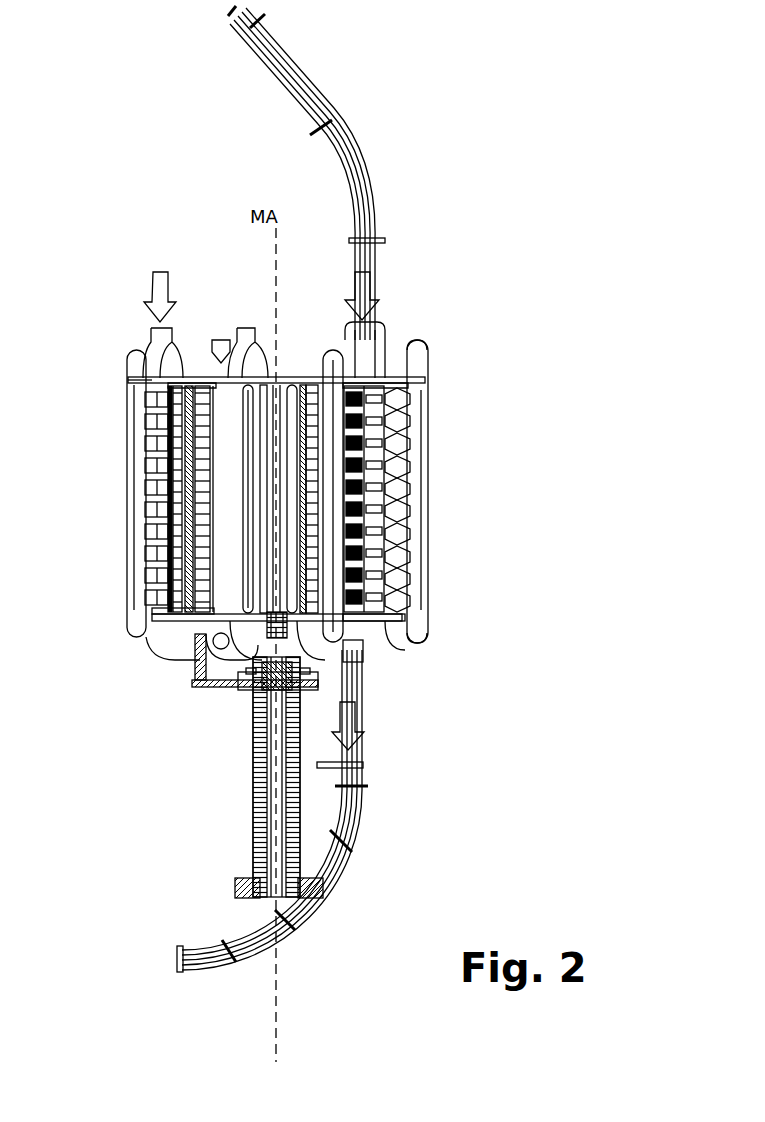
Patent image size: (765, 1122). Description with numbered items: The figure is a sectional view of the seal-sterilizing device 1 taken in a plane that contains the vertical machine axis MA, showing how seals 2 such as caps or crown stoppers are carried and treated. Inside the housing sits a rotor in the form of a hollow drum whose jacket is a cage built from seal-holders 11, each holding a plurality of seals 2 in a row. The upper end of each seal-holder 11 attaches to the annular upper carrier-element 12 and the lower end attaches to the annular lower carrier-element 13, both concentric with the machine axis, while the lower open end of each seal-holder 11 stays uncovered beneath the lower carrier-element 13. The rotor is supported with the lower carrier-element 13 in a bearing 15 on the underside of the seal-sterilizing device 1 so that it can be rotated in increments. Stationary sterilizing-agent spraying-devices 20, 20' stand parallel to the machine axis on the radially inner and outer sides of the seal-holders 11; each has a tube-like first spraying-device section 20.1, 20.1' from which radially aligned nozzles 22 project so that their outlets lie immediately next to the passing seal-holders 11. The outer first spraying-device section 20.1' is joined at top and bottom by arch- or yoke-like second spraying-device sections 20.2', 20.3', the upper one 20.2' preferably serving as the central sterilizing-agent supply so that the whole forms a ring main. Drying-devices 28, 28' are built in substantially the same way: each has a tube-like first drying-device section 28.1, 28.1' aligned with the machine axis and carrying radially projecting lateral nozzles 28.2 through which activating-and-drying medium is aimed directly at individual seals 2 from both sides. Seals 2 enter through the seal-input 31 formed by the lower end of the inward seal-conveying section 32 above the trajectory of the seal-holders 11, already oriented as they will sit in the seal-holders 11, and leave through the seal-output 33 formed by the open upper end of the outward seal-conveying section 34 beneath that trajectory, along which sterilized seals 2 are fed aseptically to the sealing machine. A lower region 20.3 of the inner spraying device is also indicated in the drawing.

The seal-sterilizing device 1 is at (468, 235).
The seals 2 is at (313, 537).
The seal-holders 11 is at (285, 652).
The upper carrier-element 12 is at (187, 390).
The lower carrier-element 13 is at (185, 620).
The bearing 15 is at (292, 691).
The sterilizing-agent spraying-device 20 is at (396, 458).
The sterilizing-agent spraying-device 20' is at (477, 489).
The first spraying-device section 20.1 is at (424, 497).
The first spraying-device section 20.1' is at (467, 500).
The second spraying-device section 20.2' is at (409, 311).
The outlet 20.3 is at (385, 703).
The second spraying-device section 20.3' is at (471, 652).
The nozzles 22 is at (362, 488).
The drying-device 28 is at (240, 333).
The drying-device 28' is at (120, 500).
The first drying-device section 28.1 is at (235, 435).
The first drying-device section 28.1' is at (81, 497).
The lateral nozzles 28.2 is at (178, 497).
The seal-input 31 is at (352, 365).
The inward seal-conveying section 32 is at (372, 257).
The seal-output 33 is at (366, 632).
The outward seal-conveying section 34 is at (353, 823).